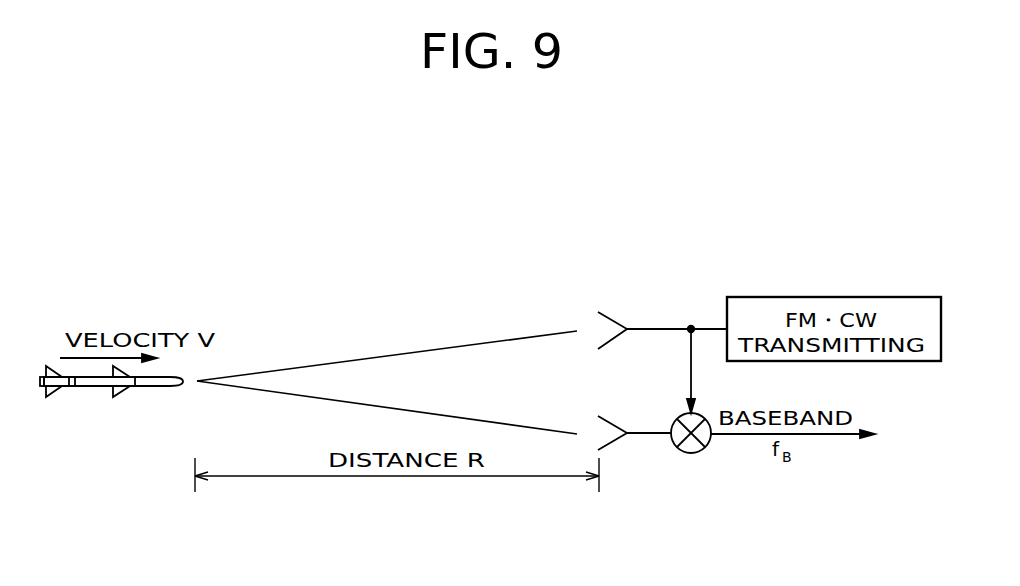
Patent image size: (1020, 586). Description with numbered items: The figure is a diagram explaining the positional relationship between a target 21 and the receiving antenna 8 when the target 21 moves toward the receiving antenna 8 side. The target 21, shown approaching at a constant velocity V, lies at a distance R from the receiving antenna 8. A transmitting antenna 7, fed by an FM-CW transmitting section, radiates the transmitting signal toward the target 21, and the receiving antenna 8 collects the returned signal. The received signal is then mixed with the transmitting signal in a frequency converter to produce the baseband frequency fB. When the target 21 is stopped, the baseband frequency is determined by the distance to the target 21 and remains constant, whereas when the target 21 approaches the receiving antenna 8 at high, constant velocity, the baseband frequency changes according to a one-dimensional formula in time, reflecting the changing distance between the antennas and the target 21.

The transmitting antenna 7 is at (611, 302).
The receiving antenna 8 is at (583, 408).
The target 21 is at (88, 386).